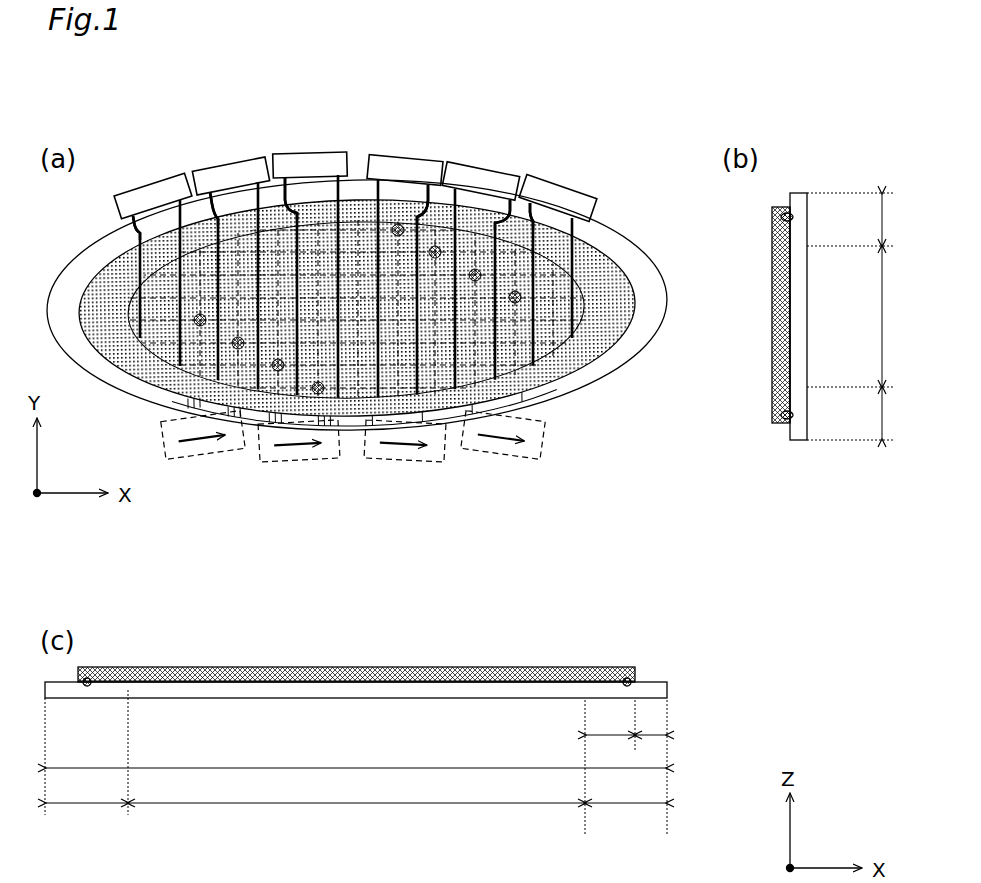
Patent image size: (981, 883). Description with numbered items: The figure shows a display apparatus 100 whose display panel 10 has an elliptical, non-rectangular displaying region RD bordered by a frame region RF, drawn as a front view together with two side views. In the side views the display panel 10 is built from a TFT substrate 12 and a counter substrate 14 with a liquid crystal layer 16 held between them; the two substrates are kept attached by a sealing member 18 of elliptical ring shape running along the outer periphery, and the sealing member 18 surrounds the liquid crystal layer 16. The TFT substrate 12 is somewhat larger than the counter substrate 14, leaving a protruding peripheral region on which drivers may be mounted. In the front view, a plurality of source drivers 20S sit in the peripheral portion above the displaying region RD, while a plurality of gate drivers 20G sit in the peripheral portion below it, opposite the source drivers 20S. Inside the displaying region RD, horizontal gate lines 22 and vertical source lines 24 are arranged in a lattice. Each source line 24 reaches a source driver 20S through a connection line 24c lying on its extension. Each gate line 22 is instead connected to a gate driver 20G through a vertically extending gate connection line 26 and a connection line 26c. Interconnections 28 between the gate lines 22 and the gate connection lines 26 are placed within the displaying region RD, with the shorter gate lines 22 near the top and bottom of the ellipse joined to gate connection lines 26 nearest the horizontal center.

The display apparatus 100 is at (636, 150).
The display panel 10 is at (675, 665).
The TFT substrate 12 is at (800, 351).
The counter substrate 14 is at (775, 380).
The liquid crystal layer 16 is at (792, 302).
The sealing member 18 is at (784, 216).
The source drivers 20S is at (513, 170).
The gate drivers 20G is at (522, 460).
The gate lines 22 is at (560, 365).
The source lines 24 is at (610, 269).
The connection line 24c is at (602, 228).
The gate connection lines 26 is at (555, 335).
The connection line 26c is at (522, 397).
The interconnections 28 is at (612, 345).